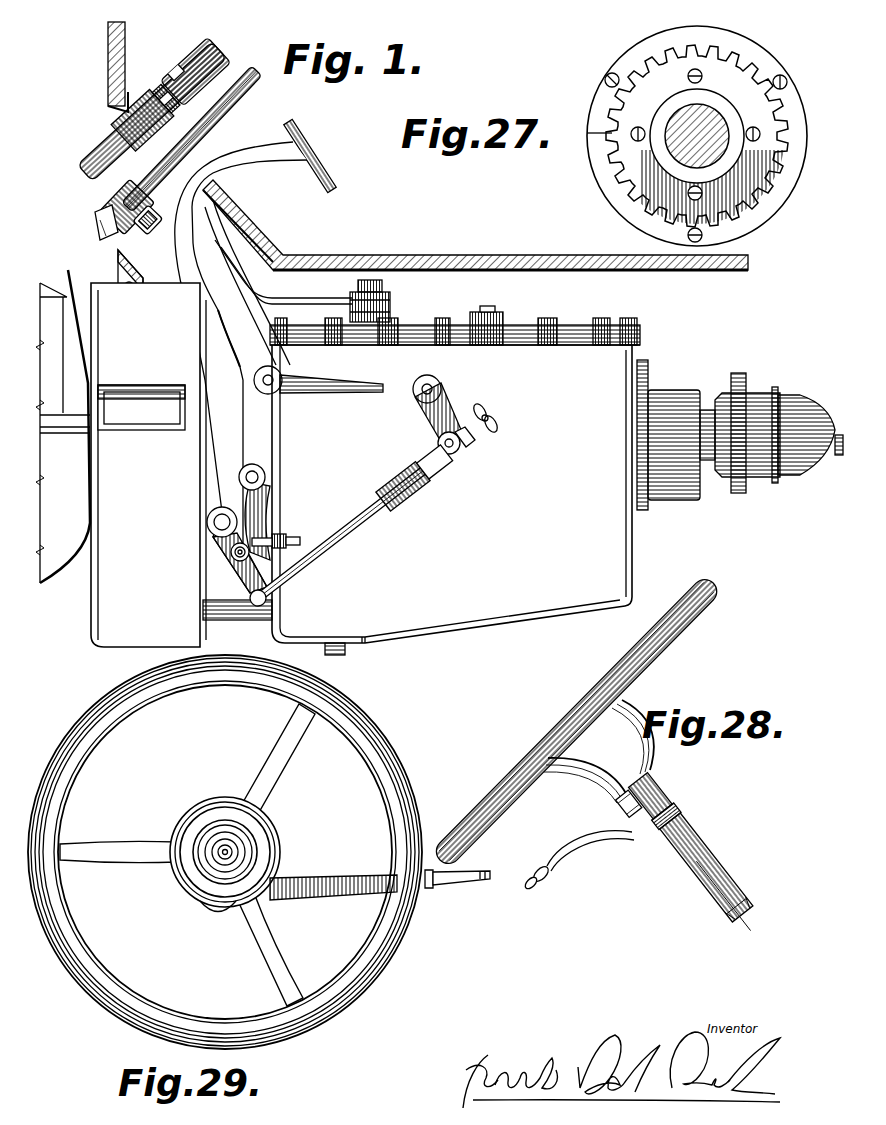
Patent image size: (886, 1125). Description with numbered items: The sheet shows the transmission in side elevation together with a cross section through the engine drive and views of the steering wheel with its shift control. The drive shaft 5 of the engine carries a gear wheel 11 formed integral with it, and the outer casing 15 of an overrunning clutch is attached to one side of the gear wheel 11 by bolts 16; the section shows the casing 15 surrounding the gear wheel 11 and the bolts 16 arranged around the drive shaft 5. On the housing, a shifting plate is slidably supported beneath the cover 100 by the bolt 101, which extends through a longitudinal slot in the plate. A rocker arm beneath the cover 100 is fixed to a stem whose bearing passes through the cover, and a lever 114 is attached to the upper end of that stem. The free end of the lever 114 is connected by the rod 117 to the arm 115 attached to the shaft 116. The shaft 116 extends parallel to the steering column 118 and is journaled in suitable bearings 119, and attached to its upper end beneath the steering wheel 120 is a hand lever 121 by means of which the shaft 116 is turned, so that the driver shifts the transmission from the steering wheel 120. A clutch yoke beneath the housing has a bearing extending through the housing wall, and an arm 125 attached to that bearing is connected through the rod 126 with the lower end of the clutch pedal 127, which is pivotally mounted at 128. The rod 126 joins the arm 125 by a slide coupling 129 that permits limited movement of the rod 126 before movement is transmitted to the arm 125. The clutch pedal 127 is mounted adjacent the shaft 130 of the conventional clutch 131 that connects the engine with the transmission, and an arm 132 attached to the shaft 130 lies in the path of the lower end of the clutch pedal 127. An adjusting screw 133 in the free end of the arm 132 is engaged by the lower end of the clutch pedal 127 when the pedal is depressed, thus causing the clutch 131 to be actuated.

In FIG. 27, the drive shaft 5 is at (713, 114).
In FIG. 27, the gear wheel 11 is at (624, 168).
In FIG. 27, the outer casing 15 is at (741, 52).
In FIG. 27, the bolts 16 is at (688, 75).
In FIG. 1, the cover 100 is at (570, 330).
In FIG. 1, the bolt 101 is at (497, 318).
In FIG. 1, the lever 114 is at (392, 308).
In FIG. 1, the arm 115 is at (142, 228).
In FIG. 1, the shaft 116 is at (234, 108).
In FIG. 28, the shaft 116 is at (691, 884).
In FIG. 1, the rod 117 is at (270, 298).
In FIG. 1, the steering column 118 is at (160, 76).
In FIG. 28, the steering column 118 is at (700, 838).
In FIG. 1, the bearings 119 is at (97, 236).
In FIG. 28, the bearings 119 is at (636, 848).
In FIG. 28, the steering wheel 120 is at (523, 762).
In FIG. 29, the steering wheel 120 is at (372, 742).
In FIG. 28, the hand lever 121 is at (578, 848).
In FIG. 29, the hand lever 121 is at (455, 882).
In FIG. 1, the arm 125 is at (440, 392).
In FIG. 1, the rod 126 is at (350, 540).
In FIG. 1, the clutch pedal 127 is at (232, 424).
In FIG. 1, the pivot 128 is at (210, 526).
In FIG. 1, the slide coupling 129 is at (432, 470).
In FIG. 1, the shaft 130 is at (266, 470).
In FIG. 1, the clutch 131 is at (95, 590).
In FIG. 1, the arm 132 is at (280, 500).
In FIG. 1, the adjusting screw 133 is at (290, 533).